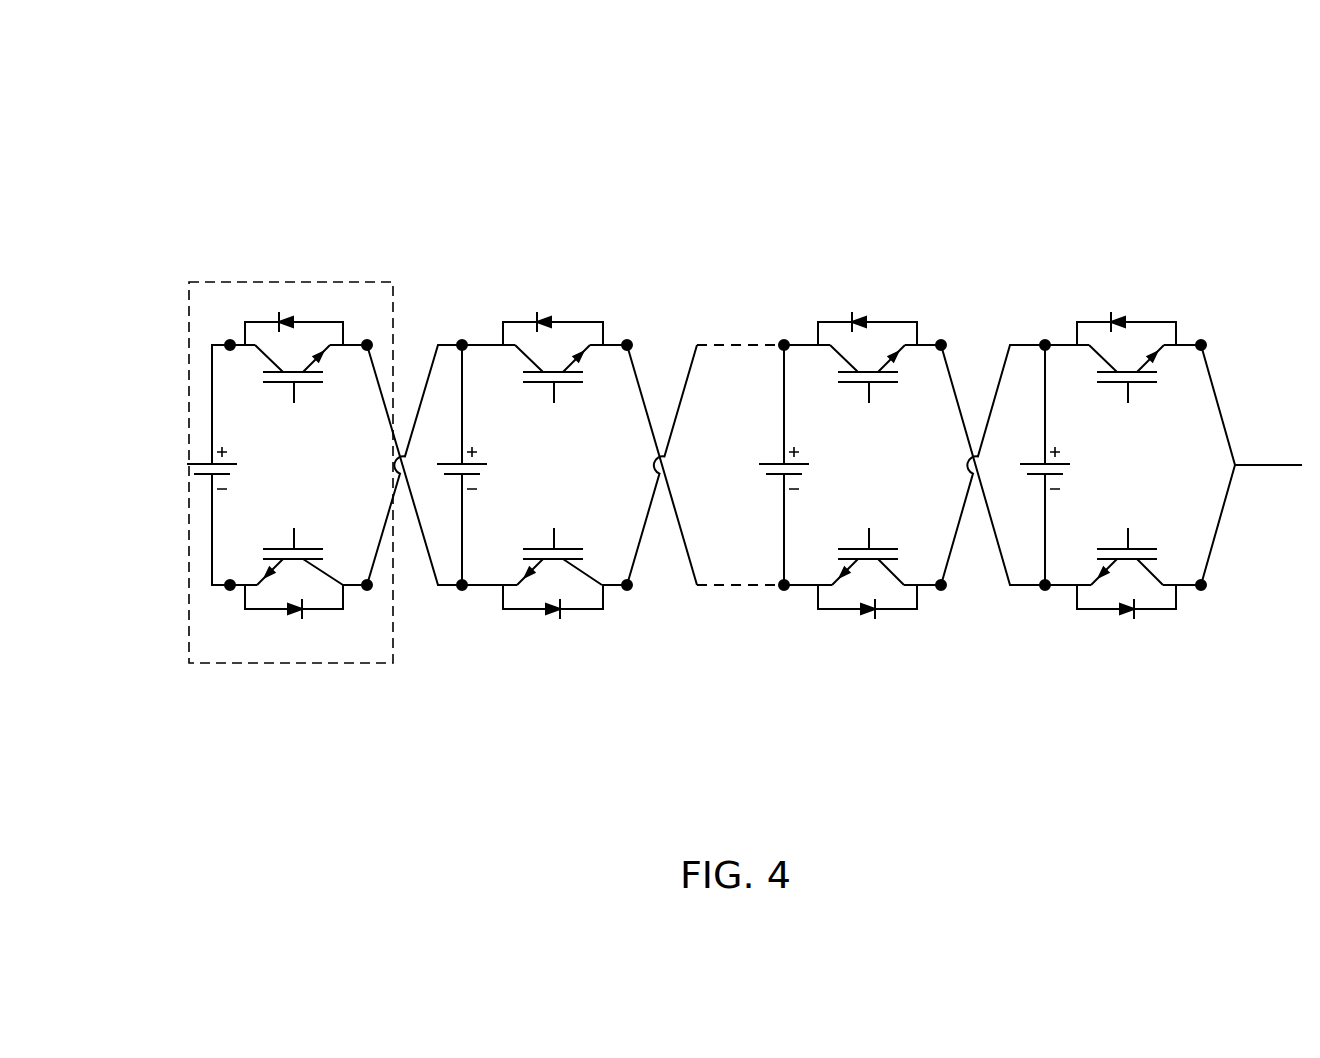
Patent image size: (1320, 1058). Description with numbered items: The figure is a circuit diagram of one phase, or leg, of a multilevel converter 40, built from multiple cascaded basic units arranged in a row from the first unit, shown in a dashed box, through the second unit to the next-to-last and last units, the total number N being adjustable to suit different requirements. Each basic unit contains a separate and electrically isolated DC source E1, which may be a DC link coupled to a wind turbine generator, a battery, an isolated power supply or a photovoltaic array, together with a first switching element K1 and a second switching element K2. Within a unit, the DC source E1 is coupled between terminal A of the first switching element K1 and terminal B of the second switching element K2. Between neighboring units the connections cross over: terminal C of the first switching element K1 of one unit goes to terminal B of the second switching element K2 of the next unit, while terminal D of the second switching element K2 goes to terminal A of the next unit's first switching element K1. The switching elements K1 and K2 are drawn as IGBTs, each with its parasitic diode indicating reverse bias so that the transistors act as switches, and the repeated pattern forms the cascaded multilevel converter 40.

The multilevel converter 40 is at (198, 125).
The first switching element K1 is at (710, 362).
The second switching element K2 is at (710, 566).
The separate and electrically isolated DC source E1 is at (649, 468).